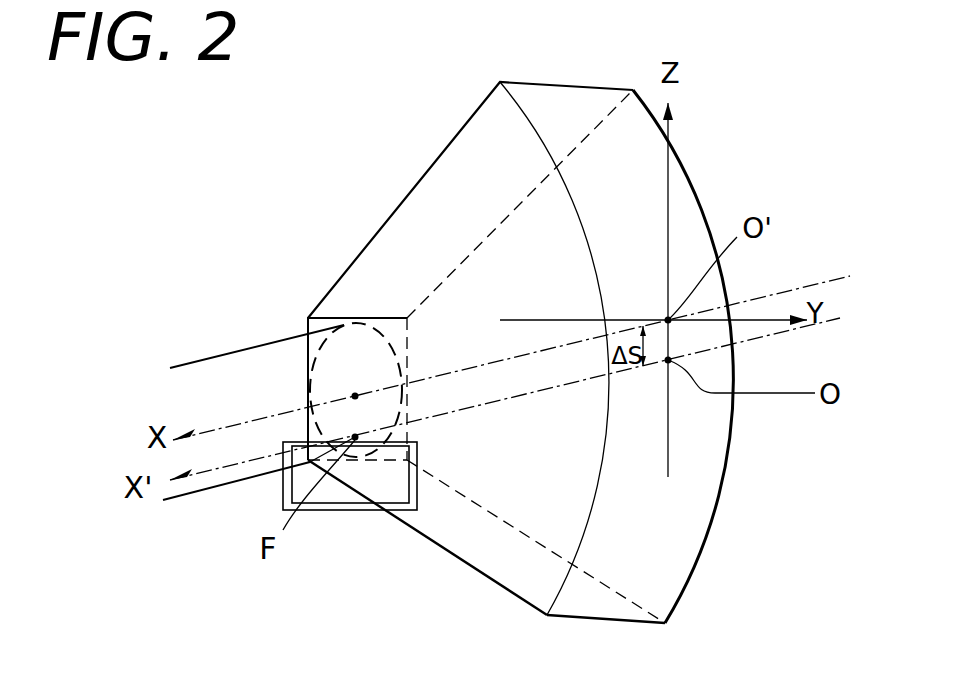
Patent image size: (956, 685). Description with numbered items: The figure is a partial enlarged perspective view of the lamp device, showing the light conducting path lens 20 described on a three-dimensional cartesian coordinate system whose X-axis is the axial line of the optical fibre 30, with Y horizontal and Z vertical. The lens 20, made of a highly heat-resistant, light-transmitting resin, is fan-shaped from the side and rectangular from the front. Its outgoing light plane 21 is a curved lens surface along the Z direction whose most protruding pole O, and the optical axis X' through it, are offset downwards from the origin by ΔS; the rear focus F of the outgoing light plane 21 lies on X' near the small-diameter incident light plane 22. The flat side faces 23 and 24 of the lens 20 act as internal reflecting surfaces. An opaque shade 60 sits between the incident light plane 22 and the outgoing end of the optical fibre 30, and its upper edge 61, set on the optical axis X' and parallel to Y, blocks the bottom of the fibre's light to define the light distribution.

The light conducting path lens 20 is at (440, 560).
The outgoing light plane 21 is at (683, 547).
The incident light plane 22 is at (310, 390).
The side face 23 is at (725, 470).
The side face 24 is at (380, 232).
The optical fibre 30 is at (240, 348).
The shade 60 is at (340, 510).
The upper edge of shade 61 is at (293, 432).